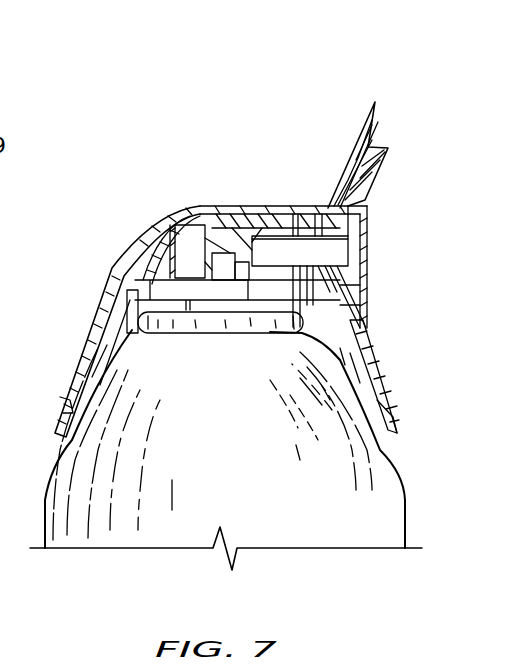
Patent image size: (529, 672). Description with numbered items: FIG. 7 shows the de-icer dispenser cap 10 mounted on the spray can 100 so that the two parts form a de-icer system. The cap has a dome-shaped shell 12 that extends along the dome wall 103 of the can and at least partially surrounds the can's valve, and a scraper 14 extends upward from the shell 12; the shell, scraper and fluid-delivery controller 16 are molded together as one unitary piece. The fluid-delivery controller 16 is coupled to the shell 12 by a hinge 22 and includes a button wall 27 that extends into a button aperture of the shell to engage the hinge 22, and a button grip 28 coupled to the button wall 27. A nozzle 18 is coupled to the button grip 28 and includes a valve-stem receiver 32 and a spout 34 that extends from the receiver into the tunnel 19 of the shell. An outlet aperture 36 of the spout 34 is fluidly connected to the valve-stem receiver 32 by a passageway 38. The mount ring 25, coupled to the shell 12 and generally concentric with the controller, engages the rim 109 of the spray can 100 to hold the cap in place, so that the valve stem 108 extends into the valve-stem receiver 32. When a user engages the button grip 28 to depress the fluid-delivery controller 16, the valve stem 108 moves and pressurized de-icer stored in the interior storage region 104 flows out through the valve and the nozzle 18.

The de-icer dispenser cap 10 is at (130, 223).
The dome-shaped shell 12 is at (73, 330).
The scraper 14 is at (343, 128).
The fluid-delivery controller 16 is at (190, 206).
The nozzle 18 is at (297, 205).
The tunnel 19 is at (368, 227).
The hinge 22 is at (139, 249).
The mount ring 25 is at (119, 322).
The button wall 27 is at (145, 226).
The button grip 28 is at (209, 206).
The valve-stem receiver 32 is at (230, 226).
The spout 34 is at (320, 205).
The outlet aperture 36 is at (361, 253).
The passageway 38 is at (272, 228).
The spray can 100 is at (44, 475).
The dome wall 103 is at (44, 501).
The interior storage region 104 is at (293, 477).
The valve stem 108 is at (198, 289).
The rim 109 is at (86, 336).